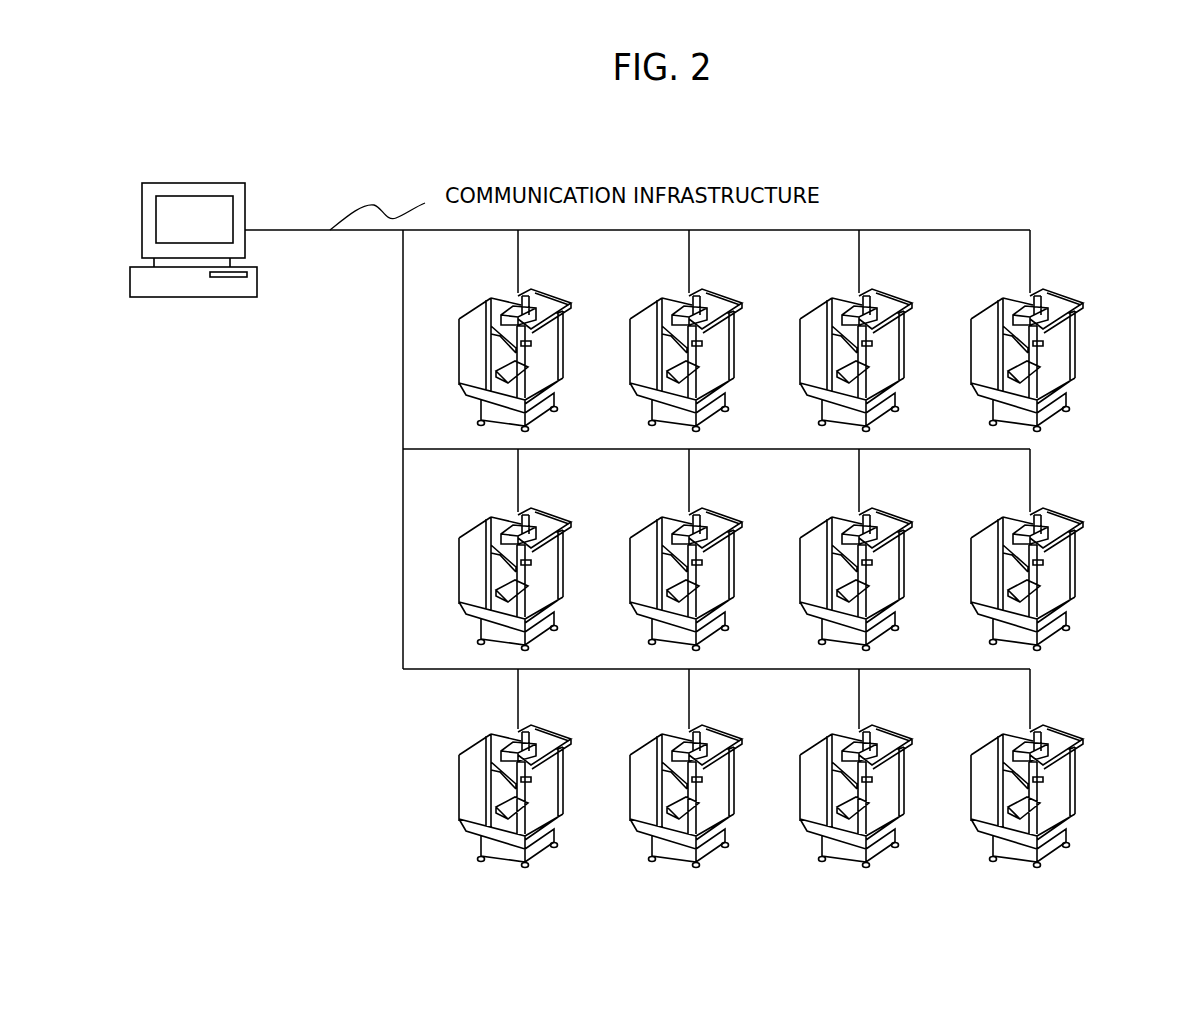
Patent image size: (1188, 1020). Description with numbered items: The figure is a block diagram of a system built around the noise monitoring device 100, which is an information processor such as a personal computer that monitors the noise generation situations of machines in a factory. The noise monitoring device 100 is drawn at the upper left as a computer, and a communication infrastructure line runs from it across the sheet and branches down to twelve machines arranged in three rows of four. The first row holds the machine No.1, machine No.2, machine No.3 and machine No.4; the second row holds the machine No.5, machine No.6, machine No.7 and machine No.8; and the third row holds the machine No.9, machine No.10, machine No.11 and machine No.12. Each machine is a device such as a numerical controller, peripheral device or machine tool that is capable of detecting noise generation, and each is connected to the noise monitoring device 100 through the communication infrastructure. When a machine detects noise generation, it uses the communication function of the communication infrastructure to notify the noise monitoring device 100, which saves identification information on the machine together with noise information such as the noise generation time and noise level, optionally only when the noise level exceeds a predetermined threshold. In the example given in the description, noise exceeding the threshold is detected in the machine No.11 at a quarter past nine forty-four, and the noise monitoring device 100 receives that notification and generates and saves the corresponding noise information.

The noise monitoring device 100 is at (200, 182).
The machine No. 1 No.1 is at (552, 349).
The machine No. 2 No.2 is at (723, 349).
The machine No. 3 No.3 is at (893, 349).
The machine No. 4 No.4 is at (1064, 349).
The machine No. 5 No.5 is at (552, 568).
The machine No. 6 No.6 is at (723, 568).
The machine No. 7 No.7 is at (893, 568).
The machine No. 8 No.8 is at (1064, 568).
The machine No. 9 No.9 is at (552, 785).
The machine No. 10 No.10 is at (730, 785).
The machine No. 11 No.11 is at (900, 785).
The machine No. 12 No.12 is at (1071, 785).